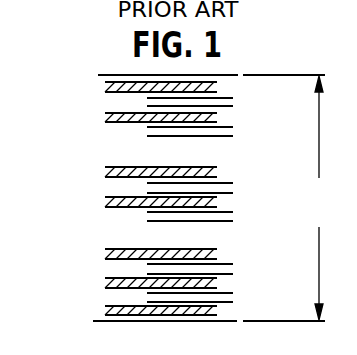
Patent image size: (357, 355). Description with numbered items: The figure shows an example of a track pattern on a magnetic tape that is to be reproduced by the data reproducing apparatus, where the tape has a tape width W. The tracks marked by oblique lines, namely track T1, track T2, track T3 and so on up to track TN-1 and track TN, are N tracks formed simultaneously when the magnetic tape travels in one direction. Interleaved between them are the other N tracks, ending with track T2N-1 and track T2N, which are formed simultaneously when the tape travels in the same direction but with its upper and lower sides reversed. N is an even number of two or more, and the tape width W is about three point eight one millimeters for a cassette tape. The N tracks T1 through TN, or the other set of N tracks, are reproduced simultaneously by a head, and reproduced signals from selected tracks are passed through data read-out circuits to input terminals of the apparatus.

The track N TN is at (105, 87).
The track N-1 TN-1 is at (105, 116).
The track 3 T3 is at (105, 253).
The track 2 T2 is at (105, 282).
The track 1 T1 is at (105, 309).
The track 2N-1 T2N-1 is at (233, 268).
The track 2N T2N is at (233, 301).
The tape width W is at (288, 198).